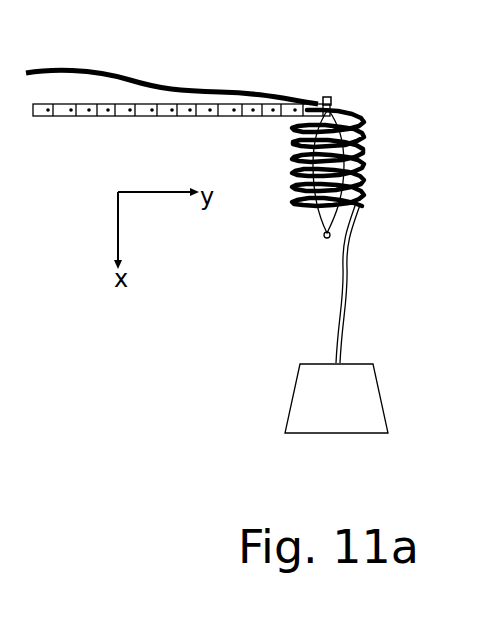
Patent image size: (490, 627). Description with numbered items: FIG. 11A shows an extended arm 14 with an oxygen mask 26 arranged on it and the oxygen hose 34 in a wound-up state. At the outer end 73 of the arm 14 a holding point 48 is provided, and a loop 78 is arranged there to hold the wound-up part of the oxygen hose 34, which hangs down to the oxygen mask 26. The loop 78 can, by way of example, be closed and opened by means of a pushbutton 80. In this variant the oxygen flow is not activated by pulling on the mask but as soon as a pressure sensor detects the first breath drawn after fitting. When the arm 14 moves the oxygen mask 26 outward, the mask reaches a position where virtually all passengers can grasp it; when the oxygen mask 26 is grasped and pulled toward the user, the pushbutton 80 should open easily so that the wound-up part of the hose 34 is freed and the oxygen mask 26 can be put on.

The arm 14 is at (147, 112).
The loop 78 is at (310, 112).
The holding point 48 is at (329, 100).
The outer end 73 is at (346, 99).
The pushbutton 80 is at (323, 237).
The oxygen hose 34 is at (348, 278).
The oxygen mask 26 is at (354, 414).